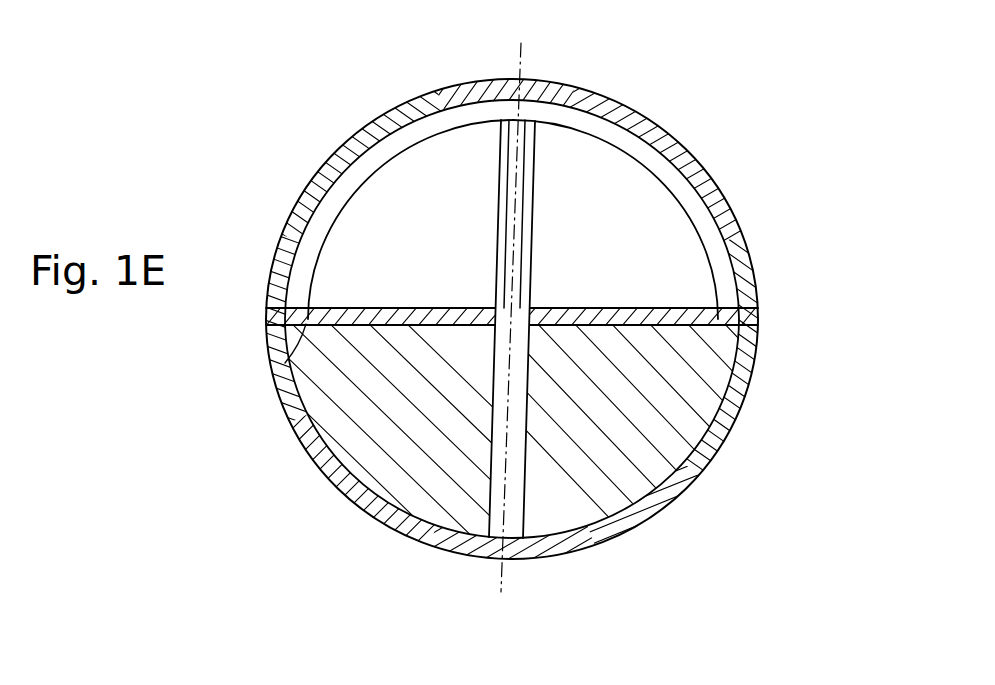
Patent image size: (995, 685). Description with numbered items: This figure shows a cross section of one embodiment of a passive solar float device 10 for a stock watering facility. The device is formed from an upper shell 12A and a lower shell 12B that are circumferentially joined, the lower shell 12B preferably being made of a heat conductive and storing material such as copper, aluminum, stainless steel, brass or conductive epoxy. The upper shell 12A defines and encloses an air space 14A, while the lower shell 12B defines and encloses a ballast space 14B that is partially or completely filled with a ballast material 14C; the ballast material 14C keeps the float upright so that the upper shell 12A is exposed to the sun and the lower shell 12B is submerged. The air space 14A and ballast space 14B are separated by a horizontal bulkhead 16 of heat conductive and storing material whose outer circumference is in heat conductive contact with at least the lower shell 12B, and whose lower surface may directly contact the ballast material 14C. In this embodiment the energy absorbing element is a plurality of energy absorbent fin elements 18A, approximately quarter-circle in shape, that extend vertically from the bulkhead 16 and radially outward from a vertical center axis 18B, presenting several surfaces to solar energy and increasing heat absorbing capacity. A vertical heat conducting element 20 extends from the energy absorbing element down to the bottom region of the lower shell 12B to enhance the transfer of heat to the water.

The solar float device 10 is at (768, 227).
The upper shell 12A is at (695, 172).
The lower shell 12B is at (630, 517).
The air space 14A is at (353, 178).
The ballast space 14B is at (353, 403).
The ballast material 14C is at (687, 418).
The horizontal bulkhead 16 is at (270, 371).
The energy absorbent fin elements 18A is at (513, 157).
The vertical center axis 18B is at (522, 66).
The vertical heat conducting element 20 is at (493, 441).